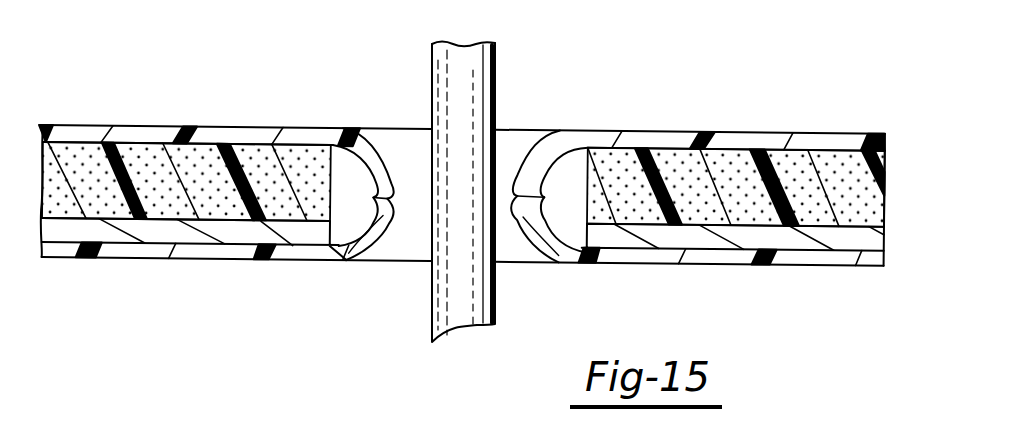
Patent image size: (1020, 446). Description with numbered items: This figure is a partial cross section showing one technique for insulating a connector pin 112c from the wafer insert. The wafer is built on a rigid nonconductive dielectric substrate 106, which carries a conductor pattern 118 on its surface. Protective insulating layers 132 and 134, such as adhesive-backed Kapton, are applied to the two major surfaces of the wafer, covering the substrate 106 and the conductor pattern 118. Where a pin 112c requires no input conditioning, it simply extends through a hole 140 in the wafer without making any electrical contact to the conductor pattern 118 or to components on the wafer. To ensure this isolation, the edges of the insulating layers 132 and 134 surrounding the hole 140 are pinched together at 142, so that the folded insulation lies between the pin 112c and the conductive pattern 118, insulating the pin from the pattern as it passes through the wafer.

The connector pin 112c is at (484, 92).
The pinched edges of insulating layers 142 is at (538, 168).
The hole 140 is at (558, 245).
The protective insulating layer 134 is at (670, 139).
The protective insulating layer 132 is at (668, 259).
The conductor pattern 118 is at (760, 243).
The dielectric substrate 106 is at (863, 198).